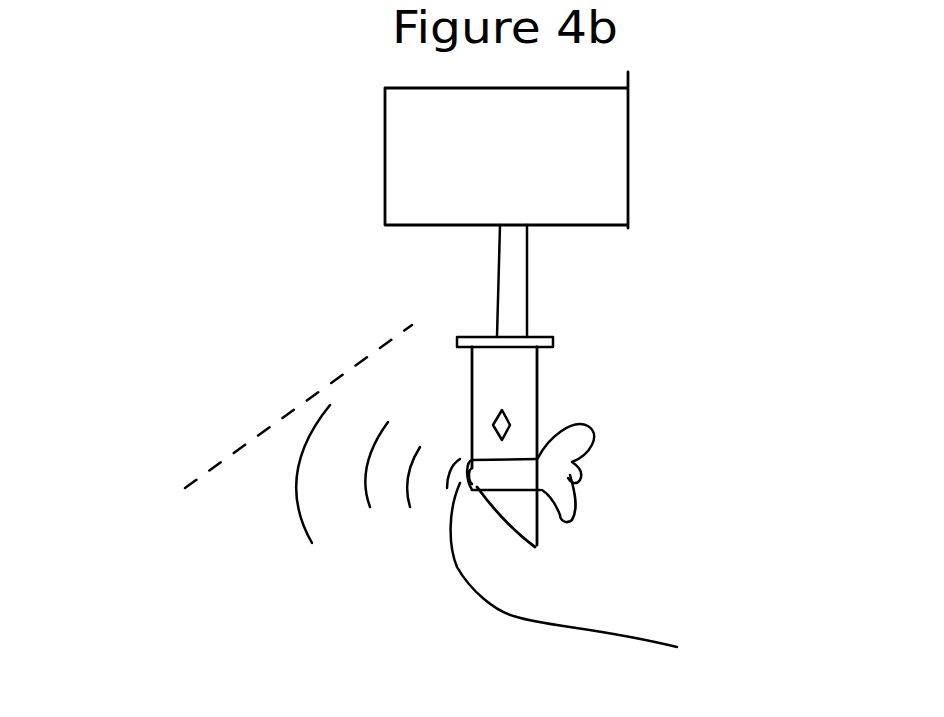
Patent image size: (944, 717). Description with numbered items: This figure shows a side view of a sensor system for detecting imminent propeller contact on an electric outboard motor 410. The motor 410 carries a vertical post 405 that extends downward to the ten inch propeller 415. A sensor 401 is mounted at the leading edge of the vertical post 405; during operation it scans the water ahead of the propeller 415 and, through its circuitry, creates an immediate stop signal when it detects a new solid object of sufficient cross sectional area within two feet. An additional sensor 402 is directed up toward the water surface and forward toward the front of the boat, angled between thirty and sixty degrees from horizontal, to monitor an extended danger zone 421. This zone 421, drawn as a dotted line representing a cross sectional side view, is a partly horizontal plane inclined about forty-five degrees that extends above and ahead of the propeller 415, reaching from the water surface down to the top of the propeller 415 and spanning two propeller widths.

The electric outboard motor 410 is at (598, 160).
The vertical post 405 is at (500, 372).
The sensor 402 is at (513, 414).
The propeller 415 is at (598, 502).
The sensor 401 is at (599, 564).
The extended danger zone 421 is at (267, 410).